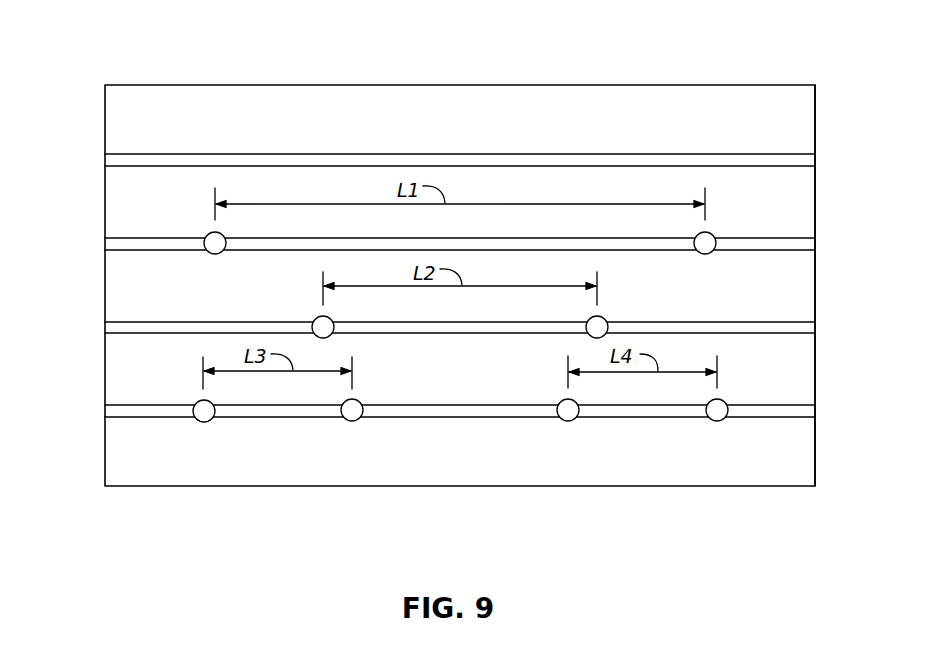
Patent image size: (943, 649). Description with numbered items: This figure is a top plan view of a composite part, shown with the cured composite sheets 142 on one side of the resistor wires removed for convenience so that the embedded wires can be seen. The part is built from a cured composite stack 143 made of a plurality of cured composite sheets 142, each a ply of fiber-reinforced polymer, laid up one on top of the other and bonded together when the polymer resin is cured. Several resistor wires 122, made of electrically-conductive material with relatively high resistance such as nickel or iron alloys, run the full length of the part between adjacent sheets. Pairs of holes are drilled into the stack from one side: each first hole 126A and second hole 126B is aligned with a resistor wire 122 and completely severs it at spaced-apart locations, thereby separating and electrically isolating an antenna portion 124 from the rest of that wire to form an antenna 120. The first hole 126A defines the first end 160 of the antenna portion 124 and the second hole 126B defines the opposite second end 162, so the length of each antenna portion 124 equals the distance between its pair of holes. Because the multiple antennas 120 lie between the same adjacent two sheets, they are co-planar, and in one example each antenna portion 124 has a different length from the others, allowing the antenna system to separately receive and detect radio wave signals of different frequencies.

The antenna 120 is at (511, 265).
The resistor wire 122 is at (204, 150).
The antenna portion 124 is at (330, 242).
The first hole 126A is at (208, 236).
The second hole 126B is at (711, 236).
The cured composite sheet 142 is at (120, 445).
The cured composite stack 143 is at (828, 452).
The first end 160 is at (213, 244).
The second end 162 is at (708, 247).